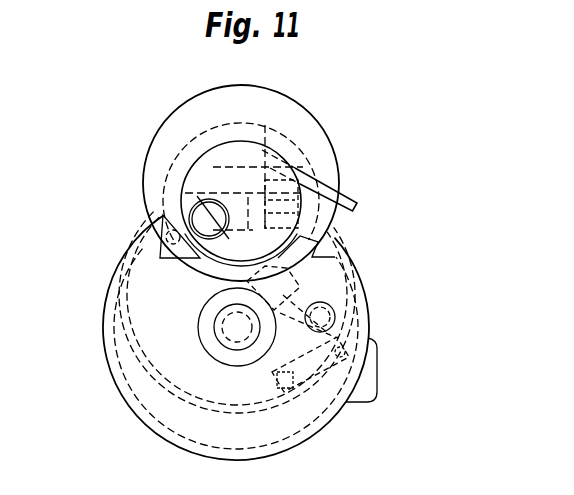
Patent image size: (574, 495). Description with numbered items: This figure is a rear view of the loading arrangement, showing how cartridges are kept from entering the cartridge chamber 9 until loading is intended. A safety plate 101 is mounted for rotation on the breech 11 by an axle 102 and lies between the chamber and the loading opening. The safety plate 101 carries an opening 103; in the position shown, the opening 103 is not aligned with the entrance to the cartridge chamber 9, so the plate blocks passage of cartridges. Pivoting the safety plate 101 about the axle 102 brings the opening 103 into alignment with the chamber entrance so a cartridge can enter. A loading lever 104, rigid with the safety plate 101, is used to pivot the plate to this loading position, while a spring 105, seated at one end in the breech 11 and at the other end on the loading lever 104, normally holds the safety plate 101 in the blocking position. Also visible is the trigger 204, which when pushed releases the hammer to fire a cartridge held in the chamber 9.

The cartridge chamber 9 is at (245, 235).
The breech 11 is at (268, 260).
The safety plate 101 is at (237, 177).
The axle 102 is at (167, 236).
The opening 103 is at (191, 207).
The loading lever 104 is at (350, 202).
The spring 105 is at (327, 233).
The trigger 204 is at (378, 371).